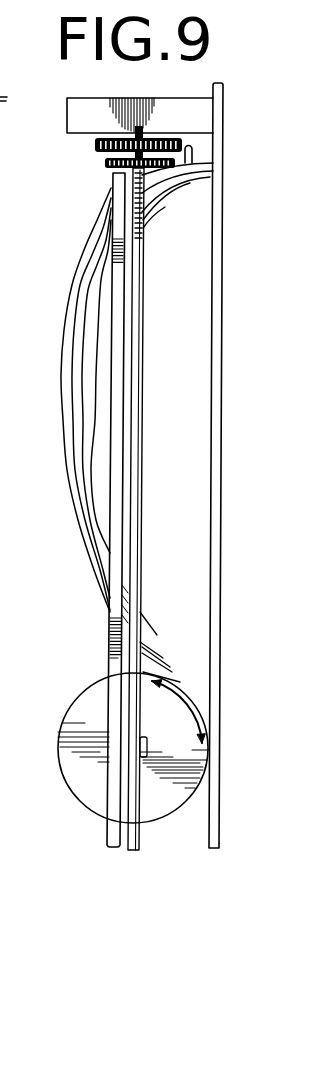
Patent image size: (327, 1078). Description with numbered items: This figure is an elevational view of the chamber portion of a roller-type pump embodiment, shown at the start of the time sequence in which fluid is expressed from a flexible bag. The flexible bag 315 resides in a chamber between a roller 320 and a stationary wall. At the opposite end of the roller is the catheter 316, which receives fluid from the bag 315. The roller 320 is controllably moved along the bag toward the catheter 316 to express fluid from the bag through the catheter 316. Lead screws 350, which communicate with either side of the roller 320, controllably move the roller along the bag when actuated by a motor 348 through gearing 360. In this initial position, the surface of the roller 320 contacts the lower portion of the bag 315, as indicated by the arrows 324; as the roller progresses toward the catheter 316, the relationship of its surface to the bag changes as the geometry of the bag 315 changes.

The motor 348 is at (208, 125).
The gearing 360 is at (105, 162).
The catheter 316 is at (192, 153).
The flexible bag 315 is at (203, 436).
The lead screws 350 is at (135, 245).
The roller 320 is at (88, 703).
The arrows 324 is at (212, 722).